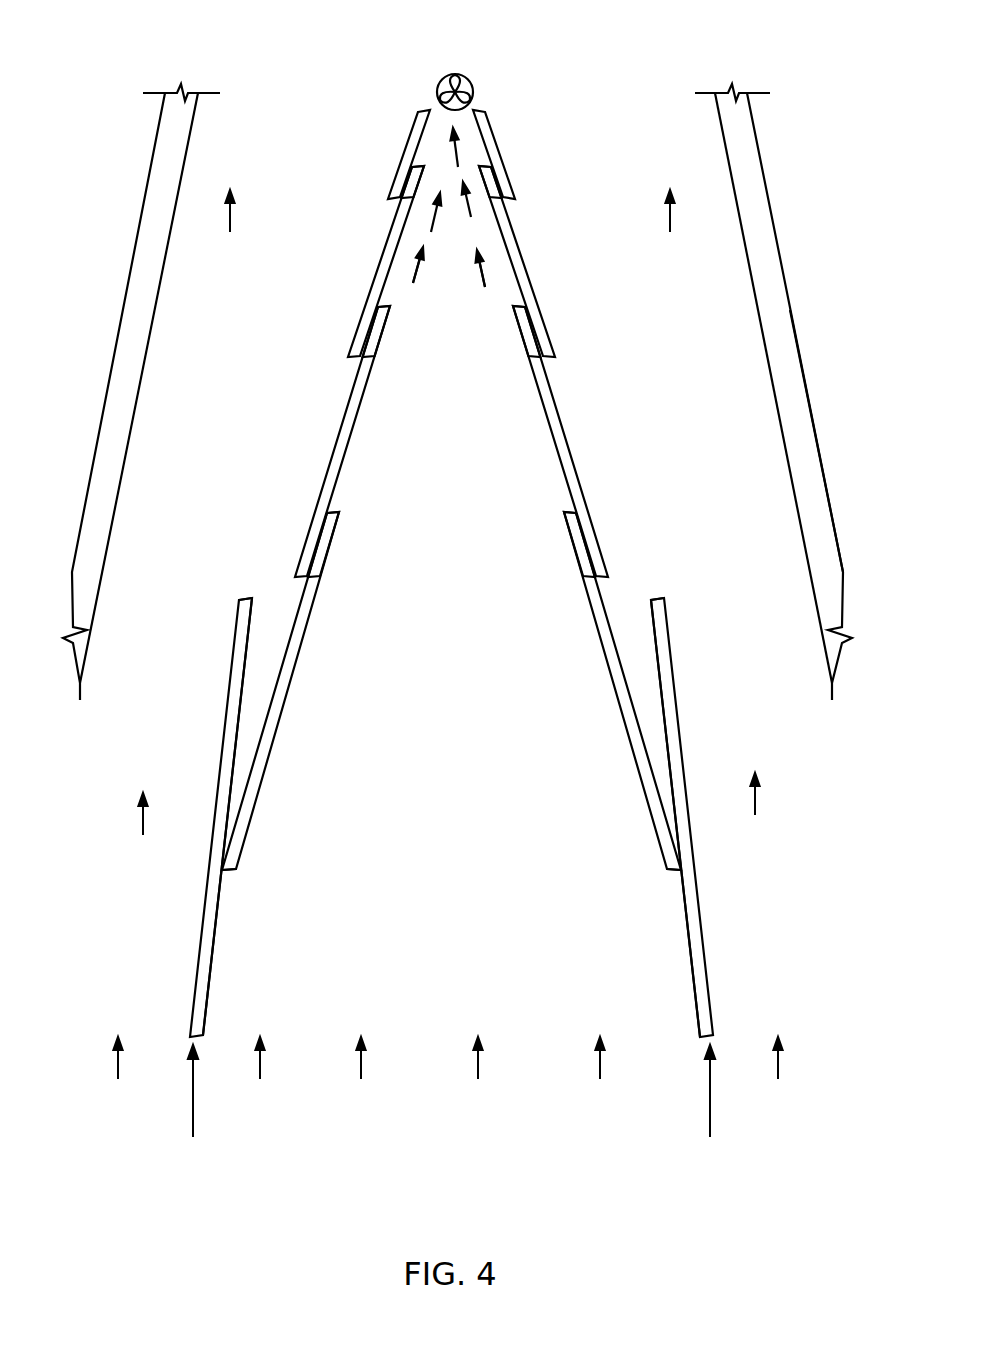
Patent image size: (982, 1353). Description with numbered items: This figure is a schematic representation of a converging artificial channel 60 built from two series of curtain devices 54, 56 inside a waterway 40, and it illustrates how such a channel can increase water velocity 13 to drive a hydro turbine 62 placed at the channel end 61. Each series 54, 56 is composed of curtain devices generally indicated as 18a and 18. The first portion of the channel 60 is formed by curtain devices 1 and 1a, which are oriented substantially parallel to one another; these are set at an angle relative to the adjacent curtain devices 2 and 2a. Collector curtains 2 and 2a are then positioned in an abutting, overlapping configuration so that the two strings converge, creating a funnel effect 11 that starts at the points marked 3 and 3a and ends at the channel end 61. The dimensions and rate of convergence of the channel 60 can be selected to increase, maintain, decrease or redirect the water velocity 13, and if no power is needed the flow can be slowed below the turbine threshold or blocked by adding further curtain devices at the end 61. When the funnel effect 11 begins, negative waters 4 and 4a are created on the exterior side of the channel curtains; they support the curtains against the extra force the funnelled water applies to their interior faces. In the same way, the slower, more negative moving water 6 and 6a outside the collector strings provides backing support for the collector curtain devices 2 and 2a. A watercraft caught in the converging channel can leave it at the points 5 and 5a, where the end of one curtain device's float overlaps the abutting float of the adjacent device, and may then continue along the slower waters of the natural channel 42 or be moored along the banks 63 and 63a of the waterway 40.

The curtain device 1 is at (696, 883).
The curtain device 1a is at (207, 883).
The collector curtain 2 is at (516, 186).
The collector curtain 2a is at (416, 120).
The starting point 3 is at (668, 873).
The starting point 3a is at (236, 872).
The negative water 4 is at (663, 818).
The negative water 4a is at (242, 816).
The exit point 5 is at (488, 163).
The exit point 5a is at (414, 168).
The slower negative moving water 6 is at (711, 502).
The slower negative moving water 6a is at (187, 512).
The funnel effect 11 is at (449, 438).
The water velocity 13 is at (449, 236).
The curtain device 18 is at (660, 598).
The curtain device 18a is at (245, 598).
The waterway 40 is at (762, 160).
The natural channel 42 is at (762, 452).
The series of curtain devices 54 is at (192, 1110).
The series of curtain devices 56 is at (707, 1110).
The artificial channel 60 is at (448, 1036).
The channel end 61 is at (470, 130).
The hydro turbine 62 is at (468, 78).
The bank 63 is at (768, 290).
The bank 63a is at (130, 292).